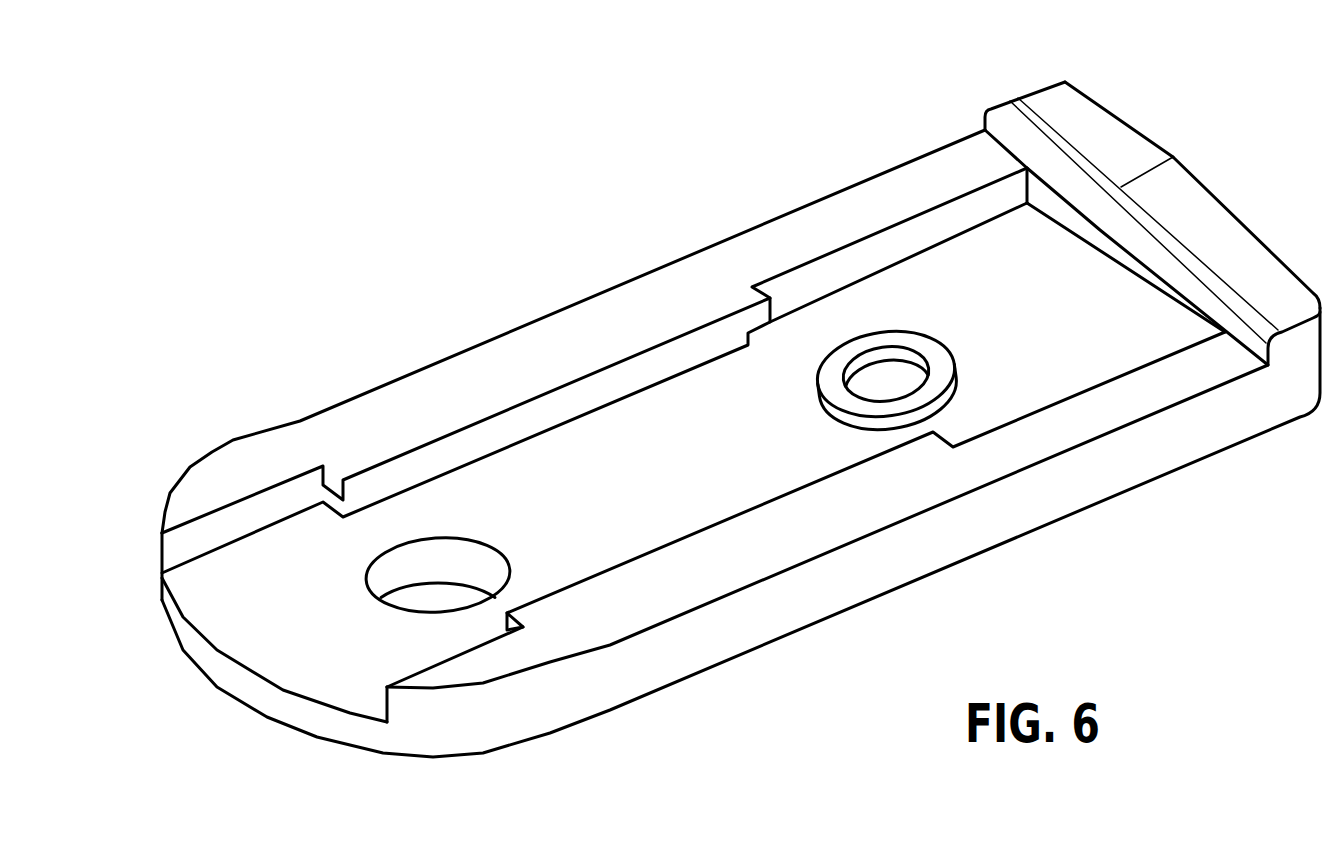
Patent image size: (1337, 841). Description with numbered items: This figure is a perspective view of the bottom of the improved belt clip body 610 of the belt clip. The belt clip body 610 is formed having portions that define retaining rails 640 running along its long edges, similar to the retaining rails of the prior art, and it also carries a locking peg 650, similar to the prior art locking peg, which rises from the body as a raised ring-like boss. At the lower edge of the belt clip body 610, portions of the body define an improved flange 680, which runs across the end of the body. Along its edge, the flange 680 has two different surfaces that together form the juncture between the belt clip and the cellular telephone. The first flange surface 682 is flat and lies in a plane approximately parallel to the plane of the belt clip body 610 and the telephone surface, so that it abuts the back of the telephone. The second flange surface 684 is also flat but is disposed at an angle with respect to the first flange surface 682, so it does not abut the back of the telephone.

The belt clip body 610 is at (612, 247).
The retaining rails 640 is at (390, 422).
The locking peg 650 is at (942, 362).
The flange 680 is at (996, 127).
The first flange surface 682 is at (1108, 133).
The second flange surface 684 is at (1235, 242).